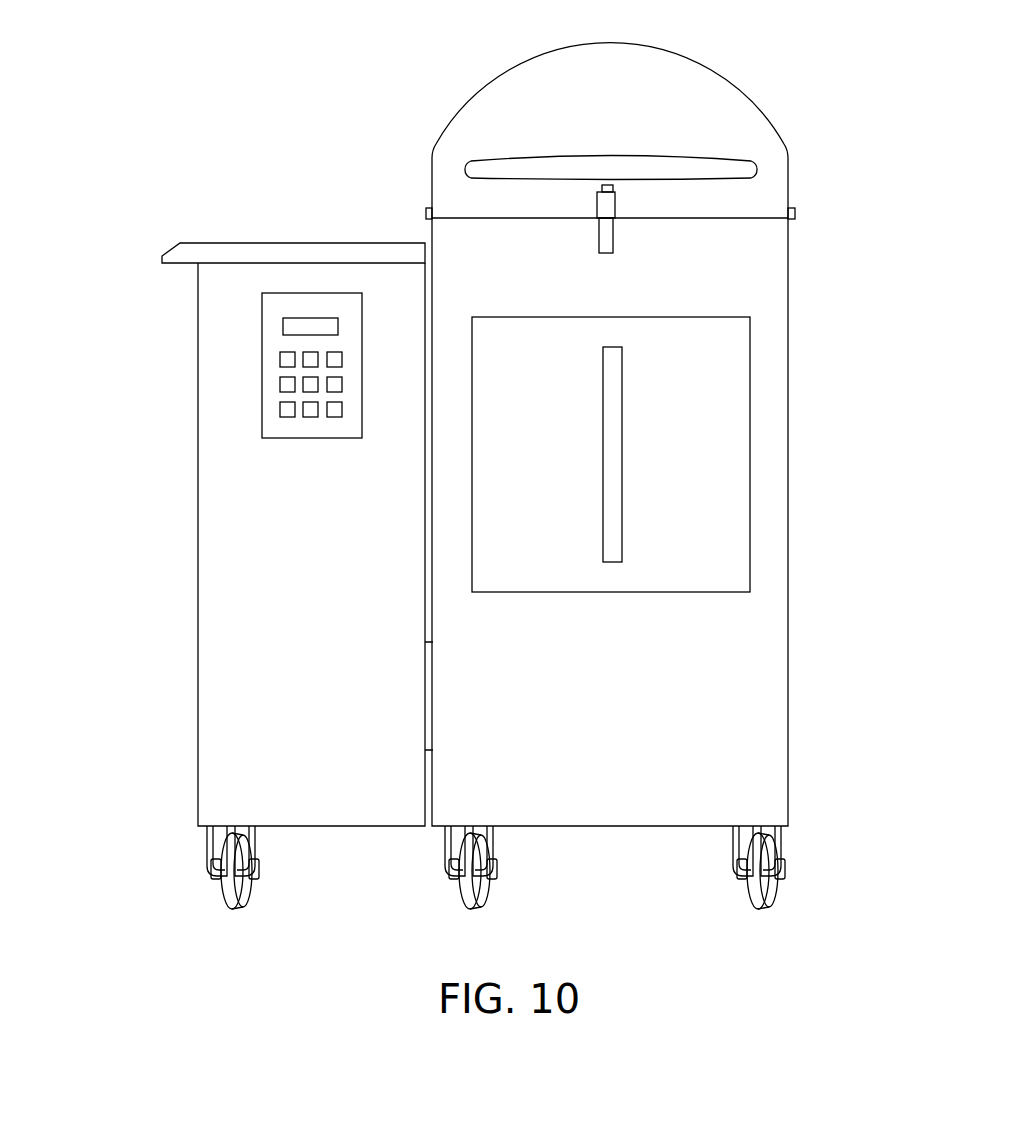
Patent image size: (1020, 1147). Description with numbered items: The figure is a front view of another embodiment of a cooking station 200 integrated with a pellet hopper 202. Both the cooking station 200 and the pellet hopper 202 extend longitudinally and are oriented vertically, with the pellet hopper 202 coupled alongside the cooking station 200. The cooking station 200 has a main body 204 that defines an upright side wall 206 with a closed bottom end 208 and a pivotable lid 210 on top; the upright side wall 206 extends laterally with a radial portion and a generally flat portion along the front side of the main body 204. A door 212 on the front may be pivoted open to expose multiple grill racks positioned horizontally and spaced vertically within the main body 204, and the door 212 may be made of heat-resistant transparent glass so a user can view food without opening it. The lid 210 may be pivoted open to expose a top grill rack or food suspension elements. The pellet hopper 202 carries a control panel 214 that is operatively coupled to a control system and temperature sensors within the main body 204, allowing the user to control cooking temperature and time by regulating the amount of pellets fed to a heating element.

The cooking station 200 is at (848, 128).
The pellet hopper 202 is at (157, 303).
The main body 204 is at (790, 304).
The upright side wall 206 is at (790, 453).
The closed bottom end 208 is at (636, 826).
The pivotable lid 210 is at (731, 79).
The door 212 is at (731, 573).
The control panel 214 is at (278, 309).